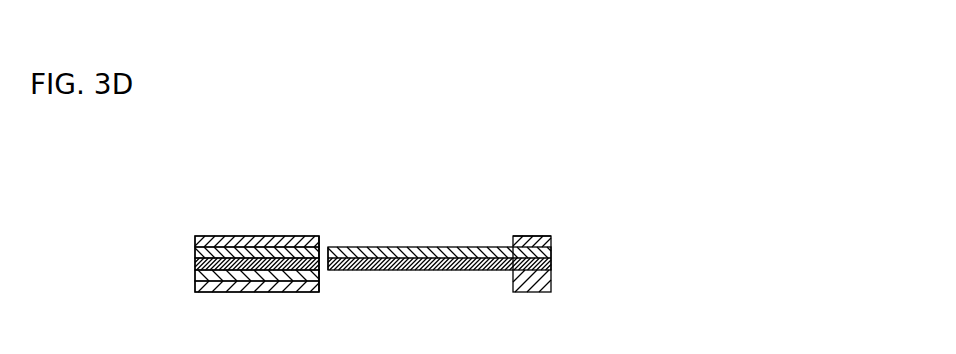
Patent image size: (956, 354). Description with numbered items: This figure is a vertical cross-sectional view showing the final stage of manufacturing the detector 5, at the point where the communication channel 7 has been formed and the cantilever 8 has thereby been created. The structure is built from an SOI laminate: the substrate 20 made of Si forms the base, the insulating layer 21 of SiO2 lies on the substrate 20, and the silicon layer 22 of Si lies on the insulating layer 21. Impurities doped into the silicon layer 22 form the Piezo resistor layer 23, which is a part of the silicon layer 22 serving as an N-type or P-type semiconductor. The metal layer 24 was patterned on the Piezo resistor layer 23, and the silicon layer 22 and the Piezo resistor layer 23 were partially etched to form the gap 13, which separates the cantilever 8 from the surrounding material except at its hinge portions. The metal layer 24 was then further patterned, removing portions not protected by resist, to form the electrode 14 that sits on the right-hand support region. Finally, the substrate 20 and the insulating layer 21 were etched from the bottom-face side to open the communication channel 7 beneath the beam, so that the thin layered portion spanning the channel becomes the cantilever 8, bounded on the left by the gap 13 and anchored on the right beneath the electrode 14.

The detector 5 is at (532, 226).
The communication channel 7 is at (321, 273).
The cantilever 8 is at (382, 241).
The gap 13 is at (323, 272).
The electrode 14 is at (552, 240).
The substrate 20 is at (195, 286).
The insulating layer 21 is at (195, 275).
The silicon layer 22 is at (195, 264).
The Piezo resistor layer 23 is at (195, 252).
The metal layer 24 is at (195, 241).